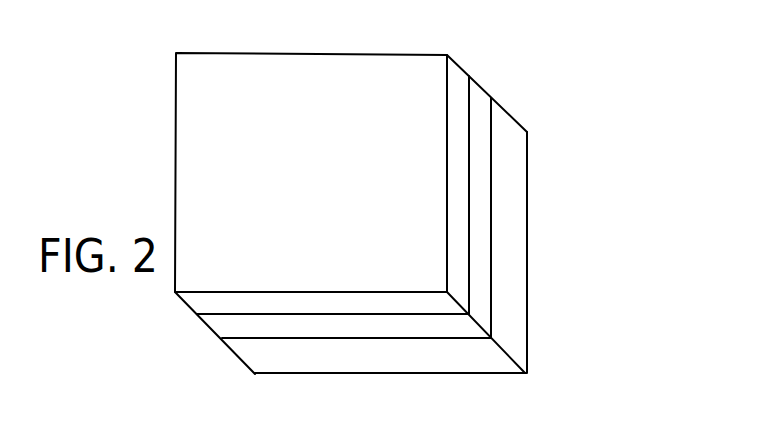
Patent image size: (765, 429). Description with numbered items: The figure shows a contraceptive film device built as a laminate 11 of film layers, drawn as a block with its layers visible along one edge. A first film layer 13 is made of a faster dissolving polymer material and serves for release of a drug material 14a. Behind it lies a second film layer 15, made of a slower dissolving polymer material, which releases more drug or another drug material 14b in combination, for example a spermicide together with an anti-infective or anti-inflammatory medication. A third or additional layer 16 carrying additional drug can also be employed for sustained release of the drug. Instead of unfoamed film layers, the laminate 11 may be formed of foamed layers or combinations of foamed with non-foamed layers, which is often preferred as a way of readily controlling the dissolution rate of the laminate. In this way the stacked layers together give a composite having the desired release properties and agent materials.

The laminate 11 is at (601, 113).
The first film layer 13 is at (465, 72).
The drug material 14a is at (461, 72).
The second film layer 15 is at (486, 92).
The drug material 14b is at (480, 122).
The third layer 16 is at (520, 274).